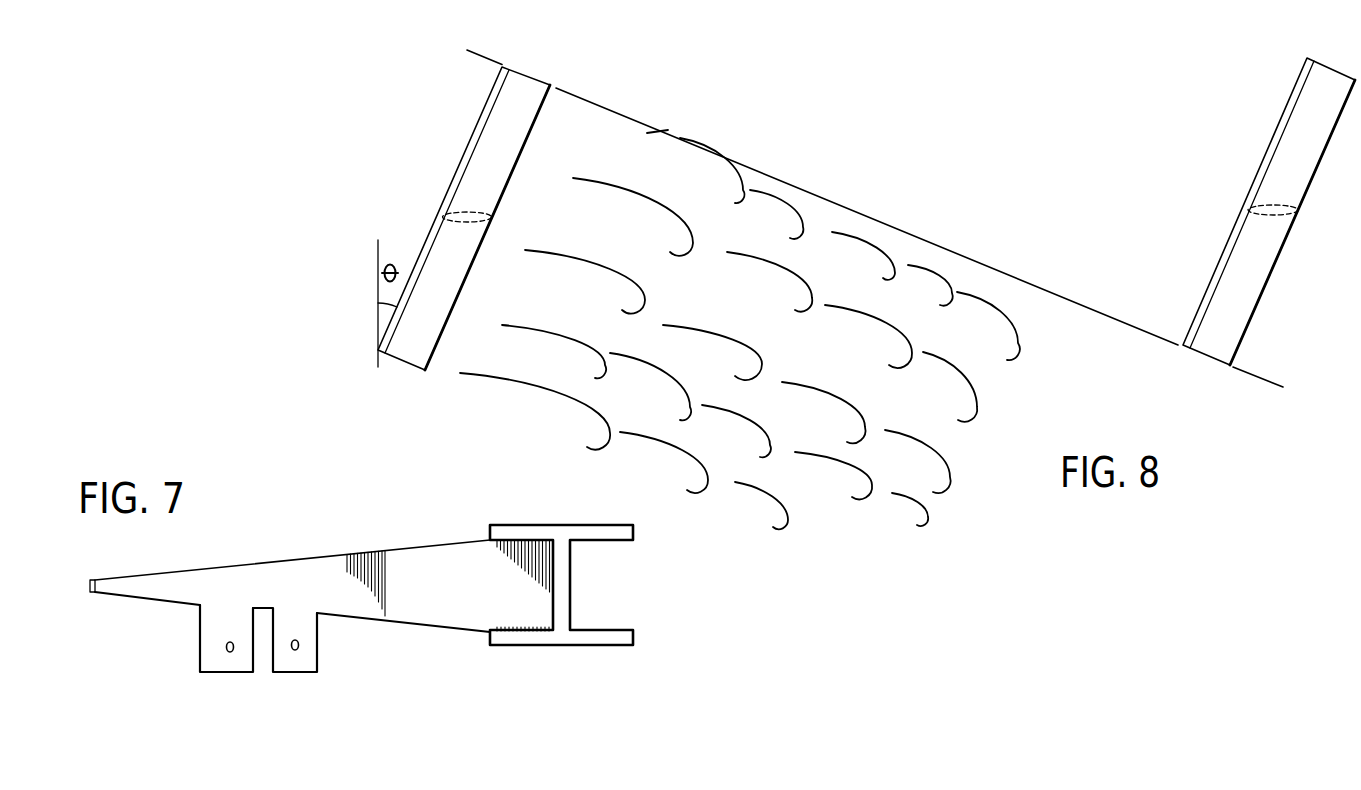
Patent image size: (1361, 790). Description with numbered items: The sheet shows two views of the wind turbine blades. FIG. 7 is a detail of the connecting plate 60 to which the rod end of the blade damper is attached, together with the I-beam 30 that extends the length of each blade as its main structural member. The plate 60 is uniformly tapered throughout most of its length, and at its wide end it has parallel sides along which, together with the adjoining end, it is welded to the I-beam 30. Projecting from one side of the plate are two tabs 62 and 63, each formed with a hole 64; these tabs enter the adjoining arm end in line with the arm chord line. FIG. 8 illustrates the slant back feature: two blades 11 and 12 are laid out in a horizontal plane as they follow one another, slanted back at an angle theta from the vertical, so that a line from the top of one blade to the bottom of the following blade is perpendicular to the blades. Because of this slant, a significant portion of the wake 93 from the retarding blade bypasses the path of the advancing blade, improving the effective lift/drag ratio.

In FIG. 8, the aerofoil-shaped blade 11 is at (444, 196).
In FIG. 8, the aerofoil-shaped blade 12 is at (1247, 197).
In FIG. 8, the wake 93 is at (756, 276).
In FIG. 7, the connecting plate 60 is at (360, 553).
In FIG. 7, the tab 62 is at (232, 673).
In FIG. 7, the tab 63 is at (300, 673).
In FIG. 7, the hole 64 is at (226, 647).
In FIG. 7, the I-beam 30 is at (582, 646).